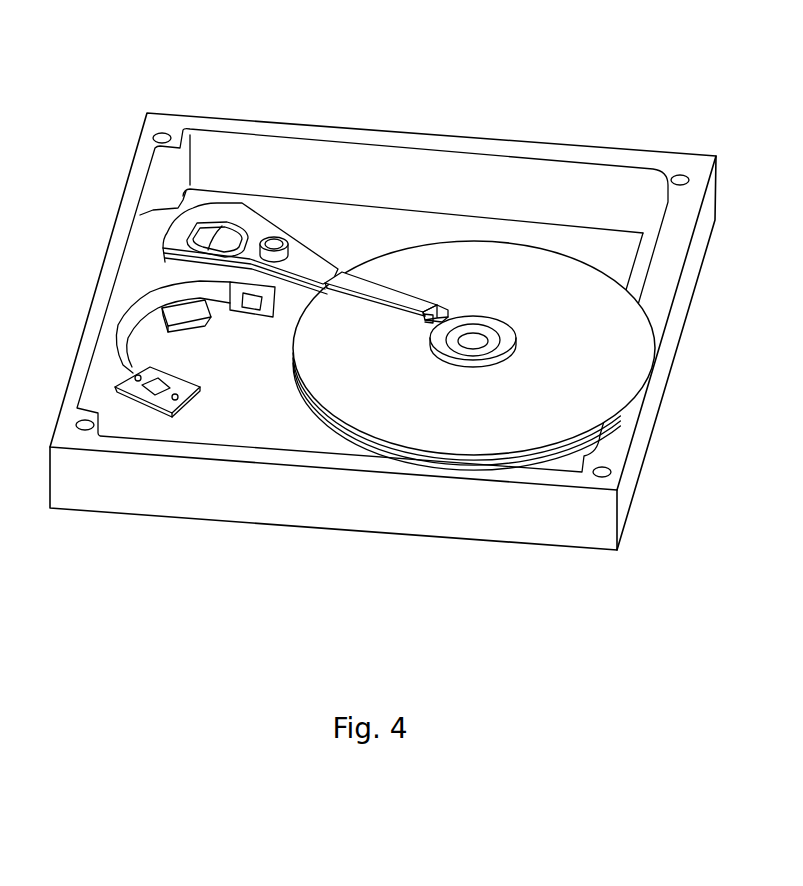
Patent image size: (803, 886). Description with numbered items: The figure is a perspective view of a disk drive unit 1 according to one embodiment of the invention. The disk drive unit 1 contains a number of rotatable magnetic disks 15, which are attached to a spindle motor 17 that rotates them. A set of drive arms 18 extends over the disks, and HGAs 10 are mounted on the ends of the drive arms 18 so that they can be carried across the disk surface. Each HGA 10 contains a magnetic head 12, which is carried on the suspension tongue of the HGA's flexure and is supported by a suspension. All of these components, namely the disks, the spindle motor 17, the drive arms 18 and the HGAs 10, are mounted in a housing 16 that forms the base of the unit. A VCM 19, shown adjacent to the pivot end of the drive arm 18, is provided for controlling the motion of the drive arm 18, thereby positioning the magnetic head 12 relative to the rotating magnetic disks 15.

The disk drive unit 1 is at (80, 39).
The HGA 10 is at (368, 287).
The magnetic head 12 is at (437, 304).
The rotatable magnetic disks 15 is at (553, 282).
The housing 16 is at (645, 198).
The spindle motor 17 is at (495, 325).
The drive arms 18 is at (298, 243).
The VCM 19 is at (215, 203).